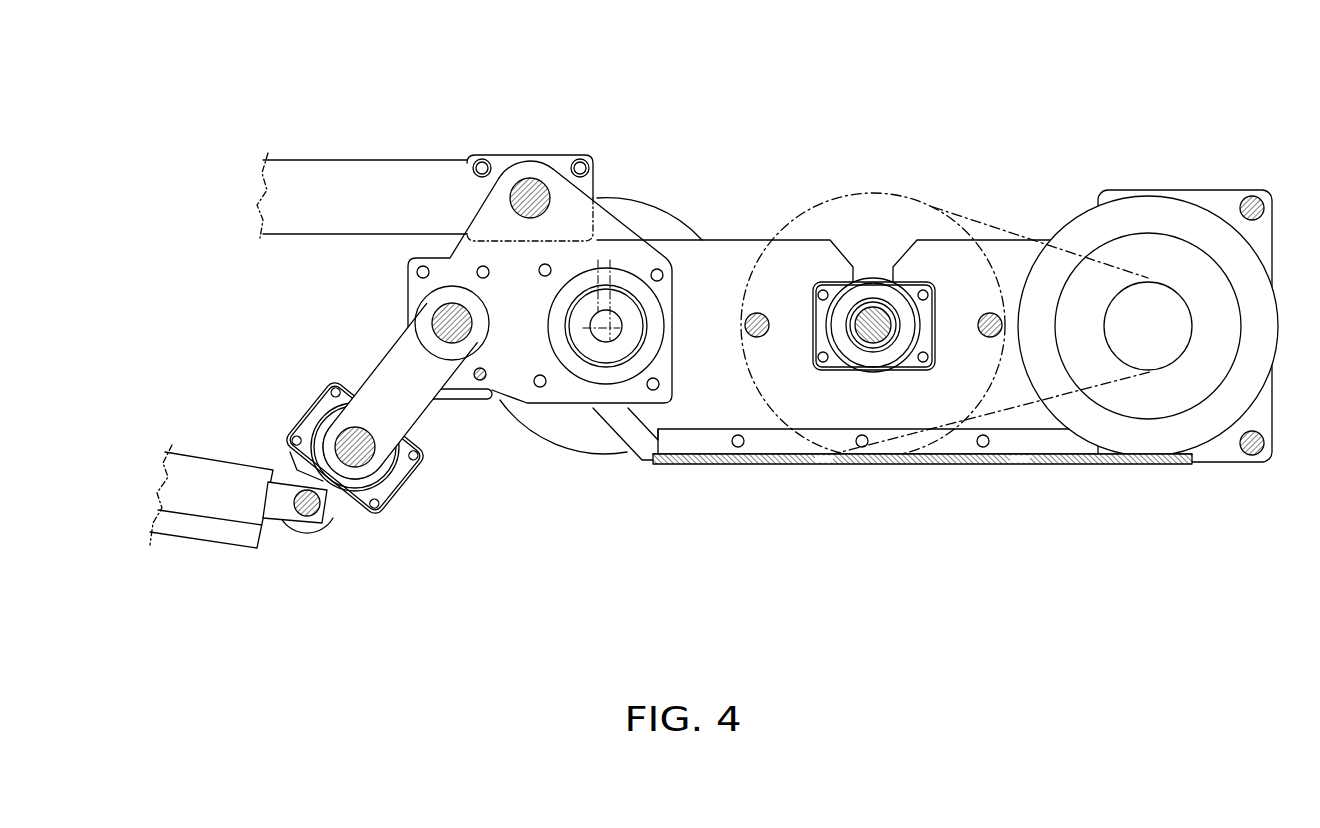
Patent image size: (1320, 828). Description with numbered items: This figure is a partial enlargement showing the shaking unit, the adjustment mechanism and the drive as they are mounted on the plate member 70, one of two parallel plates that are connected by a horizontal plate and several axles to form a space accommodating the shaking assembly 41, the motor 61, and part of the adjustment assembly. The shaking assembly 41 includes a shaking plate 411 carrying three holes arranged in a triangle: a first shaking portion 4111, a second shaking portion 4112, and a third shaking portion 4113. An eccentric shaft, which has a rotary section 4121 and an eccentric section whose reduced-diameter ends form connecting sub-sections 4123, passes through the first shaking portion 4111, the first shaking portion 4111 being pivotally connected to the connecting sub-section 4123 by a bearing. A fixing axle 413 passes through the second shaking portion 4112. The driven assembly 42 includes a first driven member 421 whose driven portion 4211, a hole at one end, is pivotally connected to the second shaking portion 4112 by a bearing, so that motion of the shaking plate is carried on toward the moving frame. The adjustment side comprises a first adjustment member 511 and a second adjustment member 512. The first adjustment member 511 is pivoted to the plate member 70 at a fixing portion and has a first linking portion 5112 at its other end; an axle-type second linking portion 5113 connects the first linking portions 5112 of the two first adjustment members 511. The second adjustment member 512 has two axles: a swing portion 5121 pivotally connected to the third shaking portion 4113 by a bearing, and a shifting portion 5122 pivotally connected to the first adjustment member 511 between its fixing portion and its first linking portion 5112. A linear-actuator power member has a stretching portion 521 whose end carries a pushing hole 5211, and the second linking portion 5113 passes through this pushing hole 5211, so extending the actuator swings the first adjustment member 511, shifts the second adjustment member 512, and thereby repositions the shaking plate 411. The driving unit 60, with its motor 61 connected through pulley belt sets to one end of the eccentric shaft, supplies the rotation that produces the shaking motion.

The shaking assembly 41 is at (585, 322).
The shaking plate 411 is at (527, 370).
The first shaking portion 4111 is at (628, 273).
The second shaking portion 4112 is at (545, 182).
The third shaking portion 4113 is at (433, 322).
The rotary section 4121 is at (620, 342).
The connecting sub-section 4123 is at (600, 352).
The fixing axle 413 is at (518, 183).
The driven assembly 42 is at (430, 126).
The first driven member 421 is at (385, 190).
The driven portion 4211 is at (529, 176).
The first adjustment member 511 is at (356, 554).
The first linking portion 5112 is at (285, 525).
The second linking portion 5113 is at (333, 505).
The second adjustment member 512 is at (402, 362).
The swing portion 5121 is at (427, 318).
The shifting portion 5122 is at (342, 438).
The stretching portion 521 is at (275, 512).
The pushing hole 5211 is at (310, 520).
The driving unit 60 is at (1049, 469).
The motor 61 is at (1175, 215).
The plate member 70 is at (735, 270).